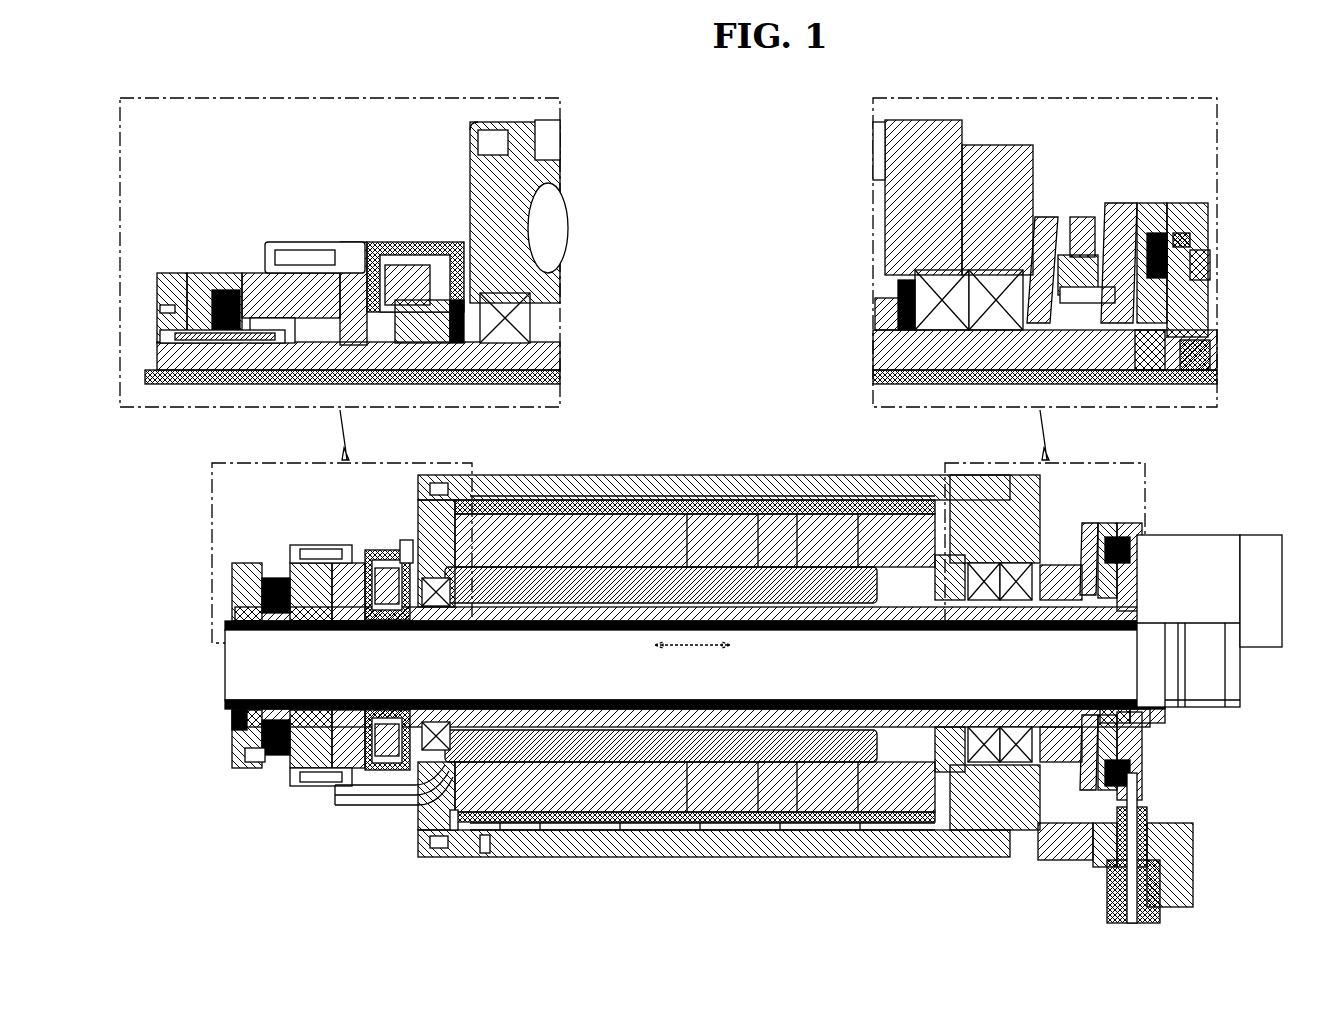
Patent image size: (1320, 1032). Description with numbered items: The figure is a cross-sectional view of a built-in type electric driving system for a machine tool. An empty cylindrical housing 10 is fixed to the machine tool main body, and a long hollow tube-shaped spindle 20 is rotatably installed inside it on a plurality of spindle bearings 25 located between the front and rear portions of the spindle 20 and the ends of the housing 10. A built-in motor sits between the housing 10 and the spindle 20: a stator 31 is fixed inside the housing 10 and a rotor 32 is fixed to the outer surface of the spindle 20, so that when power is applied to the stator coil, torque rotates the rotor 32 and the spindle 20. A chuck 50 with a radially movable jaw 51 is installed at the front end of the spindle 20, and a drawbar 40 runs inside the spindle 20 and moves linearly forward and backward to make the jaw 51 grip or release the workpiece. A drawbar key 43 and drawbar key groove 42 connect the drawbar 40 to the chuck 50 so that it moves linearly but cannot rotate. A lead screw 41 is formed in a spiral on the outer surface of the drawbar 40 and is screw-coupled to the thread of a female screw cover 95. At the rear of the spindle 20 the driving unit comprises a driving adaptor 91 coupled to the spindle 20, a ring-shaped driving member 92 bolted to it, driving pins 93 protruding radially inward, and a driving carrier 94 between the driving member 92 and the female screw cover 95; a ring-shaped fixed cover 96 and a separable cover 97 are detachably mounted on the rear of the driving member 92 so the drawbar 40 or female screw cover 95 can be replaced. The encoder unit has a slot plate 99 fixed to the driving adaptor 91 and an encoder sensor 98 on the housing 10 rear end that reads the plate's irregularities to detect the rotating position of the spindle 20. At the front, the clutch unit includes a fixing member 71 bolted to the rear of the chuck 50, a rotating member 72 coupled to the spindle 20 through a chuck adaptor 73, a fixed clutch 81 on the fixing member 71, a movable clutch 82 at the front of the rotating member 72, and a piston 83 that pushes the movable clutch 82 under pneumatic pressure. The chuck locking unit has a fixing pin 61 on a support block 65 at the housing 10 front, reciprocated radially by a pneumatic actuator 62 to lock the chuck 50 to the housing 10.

The housing 10 is at (720, 535).
The spindle 20 is at (758, 585).
The spindle bearings 25 is at (508, 332).
The stator 31 is at (642, 508).
The rotor 32 is at (686, 572).
The drawbar 40 is at (795, 500).
The lead screw 41 is at (218, 385).
The drawbar key groove 42 is at (1147, 710).
The drawbar key 43 is at (1112, 710).
The chuck 50 is at (1182, 535).
The jaw 51 is at (1262, 535).
The fixing pin 61 is at (1148, 810).
The pneumatic actuator 62 is at (1194, 838).
The support block 65 is at (1060, 860).
The fixing member 71 is at (1126, 530).
The rotating member 72 is at (1108, 525).
The chuck adaptor 73 is at (1088, 530).
The fixed clutch 81 is at (1182, 232).
The movable clutch 82 is at (1155, 232).
The piston 83 is at (1195, 262).
The driving adaptor 91 is at (345, 275).
The driving member 92 is at (246, 300).
The driving pins 93 is at (205, 290).
The driving carrier 94 is at (172, 290).
The female screw cover 95 is at (246, 386).
The fixed cover 96 is at (248, 762).
The separable cover 97 is at (235, 722).
The encoder sensor 98 is at (392, 270).
The slot plate 99 is at (420, 270).